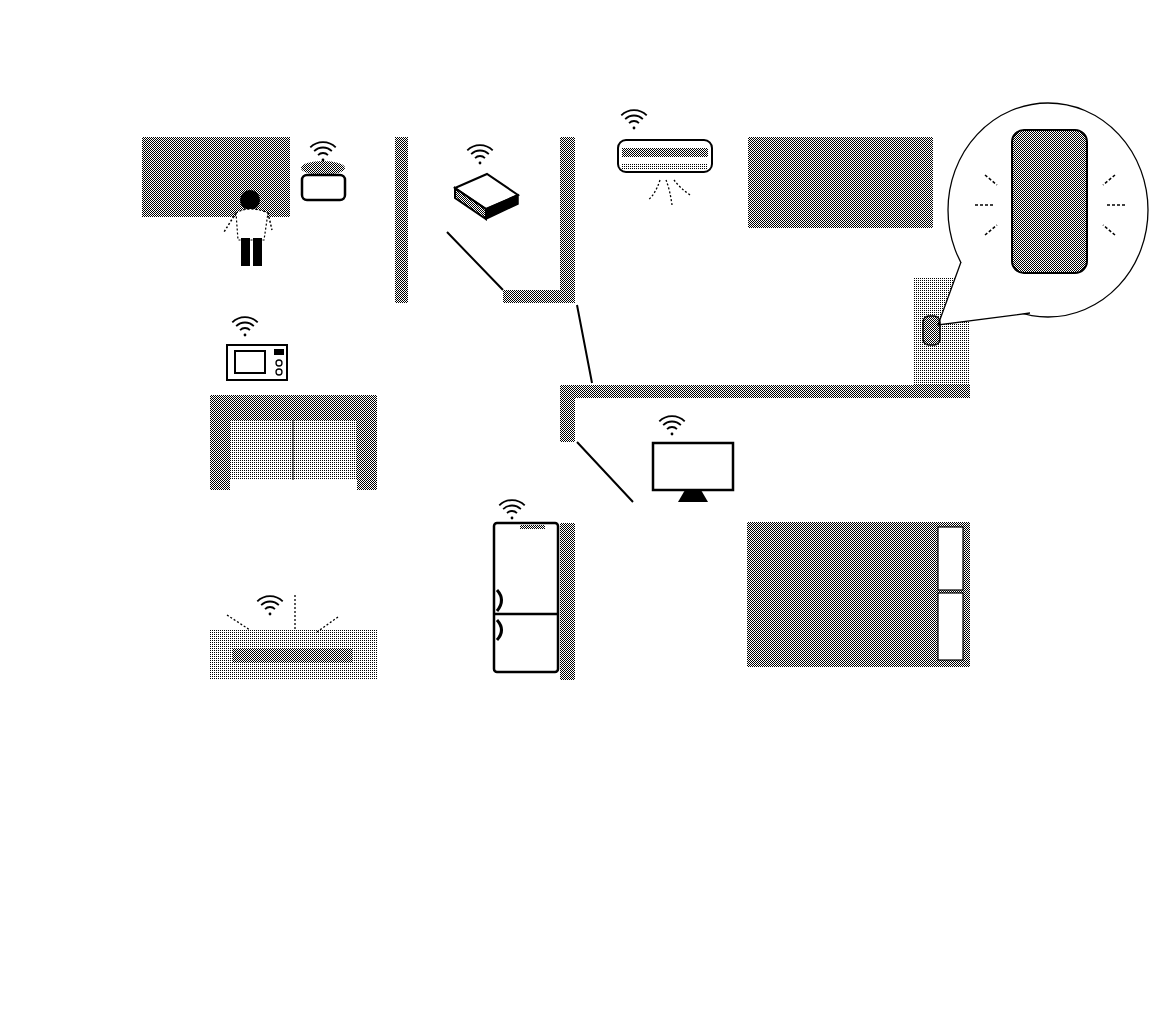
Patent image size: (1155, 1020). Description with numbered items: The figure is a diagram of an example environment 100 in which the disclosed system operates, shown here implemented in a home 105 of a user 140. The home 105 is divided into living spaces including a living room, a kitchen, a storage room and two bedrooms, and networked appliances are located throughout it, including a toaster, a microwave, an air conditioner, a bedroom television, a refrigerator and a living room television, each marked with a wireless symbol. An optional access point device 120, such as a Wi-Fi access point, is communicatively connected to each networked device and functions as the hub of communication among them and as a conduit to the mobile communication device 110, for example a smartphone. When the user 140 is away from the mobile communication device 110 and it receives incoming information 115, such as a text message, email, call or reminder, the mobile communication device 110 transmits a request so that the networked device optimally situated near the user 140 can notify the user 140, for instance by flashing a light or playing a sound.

The example environment 100 is at (243, 52).
The home 105 is at (852, 684).
The mobile communication device 110 is at (925, 318).
The incoming information 115 is at (1042, 103).
The access point device 120 is at (490, 214).
The user 140 is at (255, 265).